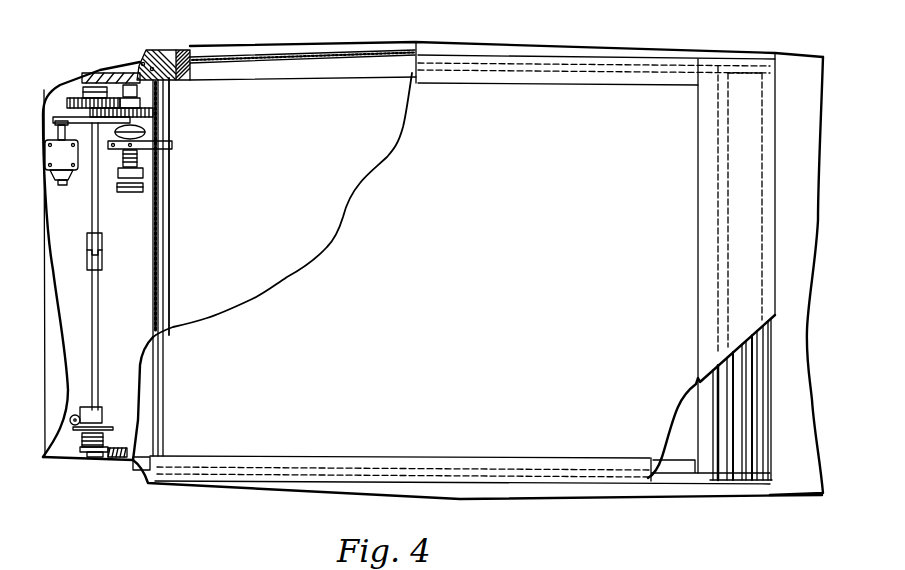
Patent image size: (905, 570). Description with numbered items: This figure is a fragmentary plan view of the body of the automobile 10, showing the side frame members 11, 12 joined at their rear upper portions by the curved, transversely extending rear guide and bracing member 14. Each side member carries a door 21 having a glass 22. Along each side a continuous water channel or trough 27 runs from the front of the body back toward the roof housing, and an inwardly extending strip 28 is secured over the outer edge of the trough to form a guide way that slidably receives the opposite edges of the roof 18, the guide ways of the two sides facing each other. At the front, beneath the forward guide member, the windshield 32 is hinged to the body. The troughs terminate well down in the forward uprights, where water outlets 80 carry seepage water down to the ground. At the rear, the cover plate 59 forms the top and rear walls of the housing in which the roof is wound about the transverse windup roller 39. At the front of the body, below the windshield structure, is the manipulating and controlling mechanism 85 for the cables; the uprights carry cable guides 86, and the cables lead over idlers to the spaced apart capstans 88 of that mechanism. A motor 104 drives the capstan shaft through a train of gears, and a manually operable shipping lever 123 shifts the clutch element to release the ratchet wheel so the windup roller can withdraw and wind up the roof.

The automobile 10 is at (803, 67).
The side frame member 11 is at (547, 53).
The side frame member 12 is at (277, 493).
The rear guide and bracing member 14 is at (703, 432).
The roof 18 is at (390, 213).
The door 21 is at (275, 72).
The glass 22 is at (345, 34).
The water channel or trough 27 is at (673, 478).
The inwardly extending strip 28 is at (507, 75).
The windshield 32 is at (165, 99).
The windup roller 39 is at (747, 470).
The cover plate 59 is at (748, 210).
The water outlet 80 is at (165, 53).
The manipulating and controlling mechanism 85 is at (112, 197).
The cable guide 86 is at (151, 67).
The capstan 88 is at (72, 86).
The motor 104 is at (67, 187).
The shipping lever 123 is at (172, 145).